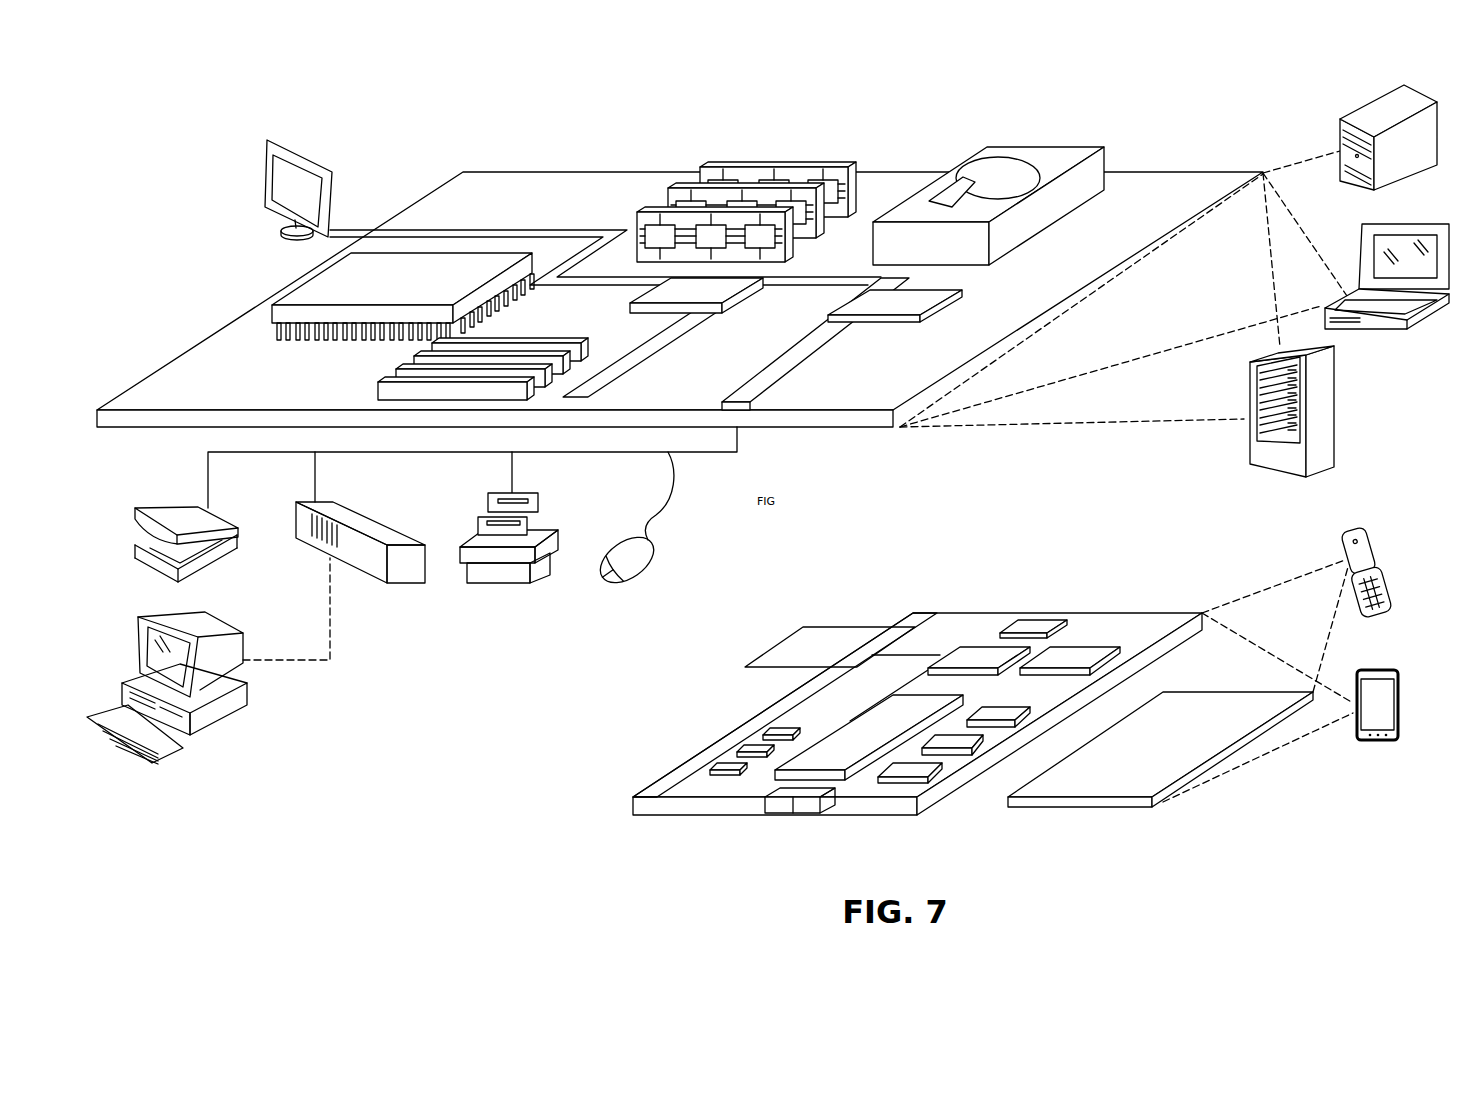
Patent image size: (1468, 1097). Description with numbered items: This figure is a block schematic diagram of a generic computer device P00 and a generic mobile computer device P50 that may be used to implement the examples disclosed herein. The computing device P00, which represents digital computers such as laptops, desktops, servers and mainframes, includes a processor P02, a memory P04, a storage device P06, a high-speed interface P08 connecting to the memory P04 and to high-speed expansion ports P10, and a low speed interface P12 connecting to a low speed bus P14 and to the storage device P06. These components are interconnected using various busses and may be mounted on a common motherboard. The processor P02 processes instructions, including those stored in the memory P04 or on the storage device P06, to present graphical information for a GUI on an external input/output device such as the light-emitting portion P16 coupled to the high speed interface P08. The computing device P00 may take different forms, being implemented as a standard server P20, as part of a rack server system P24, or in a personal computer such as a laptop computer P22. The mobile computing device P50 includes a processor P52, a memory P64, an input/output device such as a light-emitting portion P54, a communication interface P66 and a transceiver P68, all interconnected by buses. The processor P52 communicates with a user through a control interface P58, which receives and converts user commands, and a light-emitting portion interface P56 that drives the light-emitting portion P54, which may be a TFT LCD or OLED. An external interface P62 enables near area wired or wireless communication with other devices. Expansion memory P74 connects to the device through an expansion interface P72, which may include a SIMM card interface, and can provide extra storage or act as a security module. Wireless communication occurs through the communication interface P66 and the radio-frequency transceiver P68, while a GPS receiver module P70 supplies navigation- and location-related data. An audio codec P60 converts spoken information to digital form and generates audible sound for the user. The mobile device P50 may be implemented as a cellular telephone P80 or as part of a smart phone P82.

The generic computer device P00 is at (413, 120).
The processor P02 is at (297, 290).
The memory P04 is at (783, 165).
The storage device P06 is at (1034, 145).
The high-speed interface P08 is at (712, 290).
The high-speed expansion ports P10 is at (403, 372).
The low speed interface P12 is at (865, 297).
The low speed bus P14 is at (743, 395).
The light-emitting portion P16 is at (274, 138).
The standard server P20 is at (1364, 115).
The laptop computer P22 is at (1422, 220).
The rack server system P24 is at (1336, 414).
The generic mobile computer device P50 is at (1222, 813).
The processor P52 is at (837, 742).
The light-emitting portion P54 is at (1202, 707).
The light-emitting portion interface P56 is at (927, 770).
The control interface P58 is at (965, 743).
The audio codec P60 is at (1003, 712).
The external interface P62 is at (795, 798).
The memory P64 is at (747, 747).
The communication interface P66 is at (980, 650).
The transceiver P68 is at (1078, 653).
The GPS receiver module P70 is at (1035, 623).
The expansion interface P72 is at (897, 625).
The expansion memory P74 is at (808, 625).
The cellular telephone P80 is at (1362, 532).
The smart phone P82 is at (1368, 668).